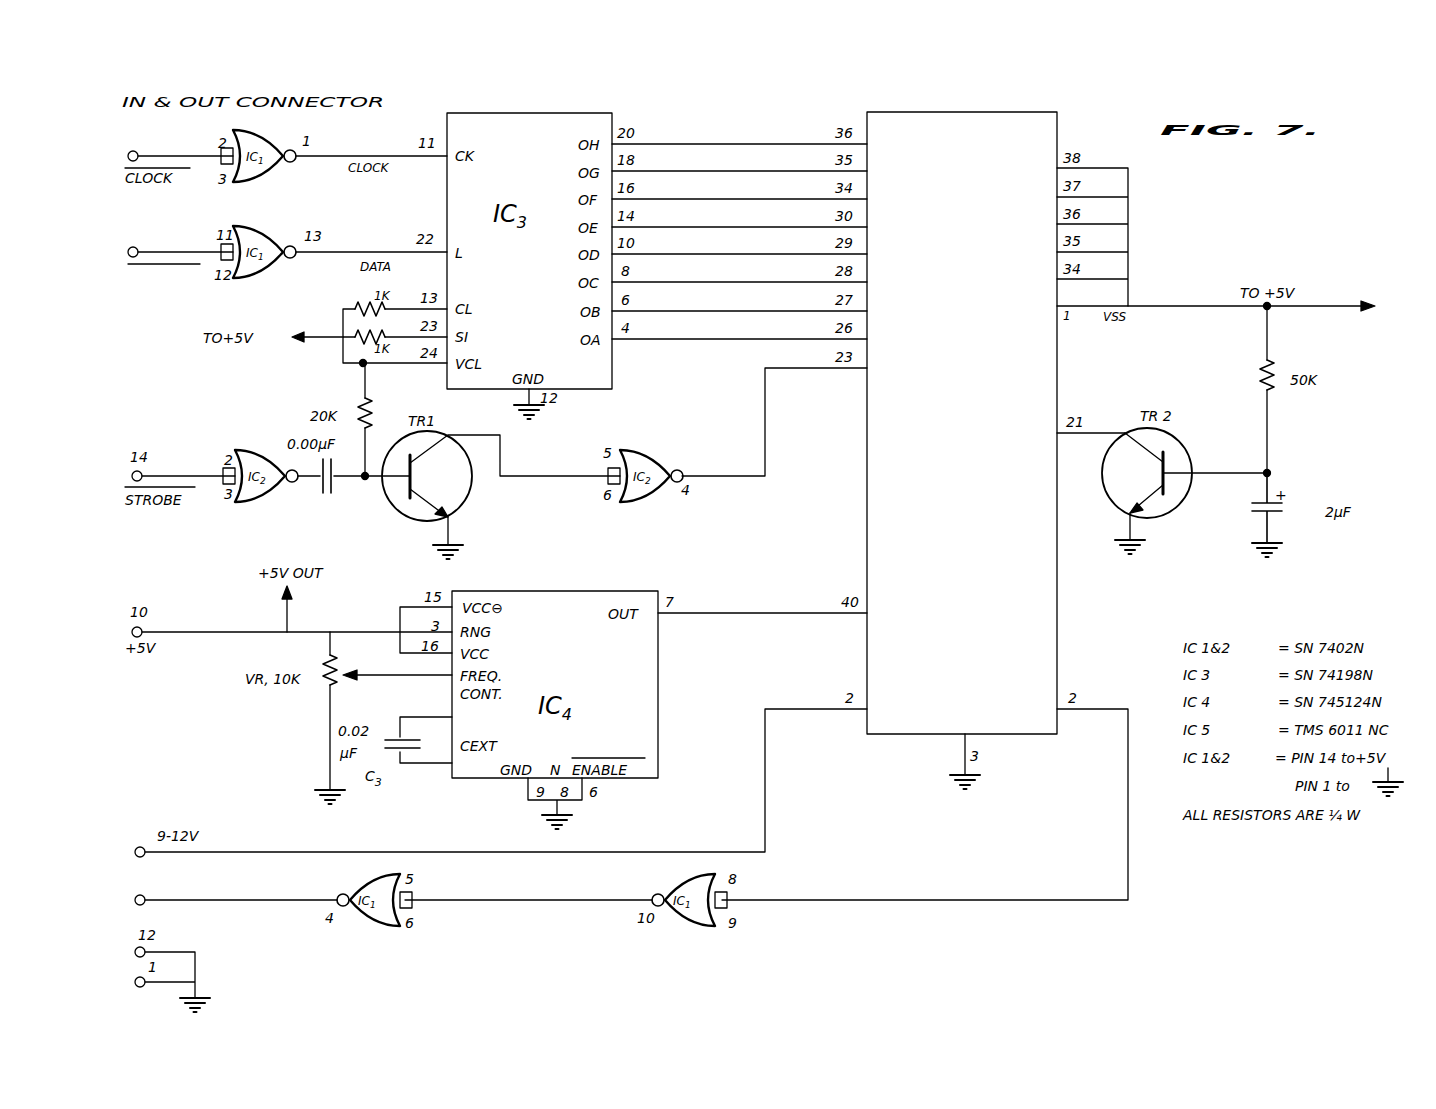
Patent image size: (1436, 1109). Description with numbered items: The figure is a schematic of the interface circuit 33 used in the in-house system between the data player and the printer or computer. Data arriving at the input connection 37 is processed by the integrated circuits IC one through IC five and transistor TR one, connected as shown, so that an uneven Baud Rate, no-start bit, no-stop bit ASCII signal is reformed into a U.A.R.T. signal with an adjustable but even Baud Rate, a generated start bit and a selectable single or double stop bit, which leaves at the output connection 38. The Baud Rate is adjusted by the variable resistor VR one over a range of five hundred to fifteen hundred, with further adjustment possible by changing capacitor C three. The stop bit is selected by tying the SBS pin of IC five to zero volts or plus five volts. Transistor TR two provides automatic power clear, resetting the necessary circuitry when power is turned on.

The interface circuit 33 is at (1200, 916).
The connection 37 is at (168, 250).
The connection 38 is at (172, 900).